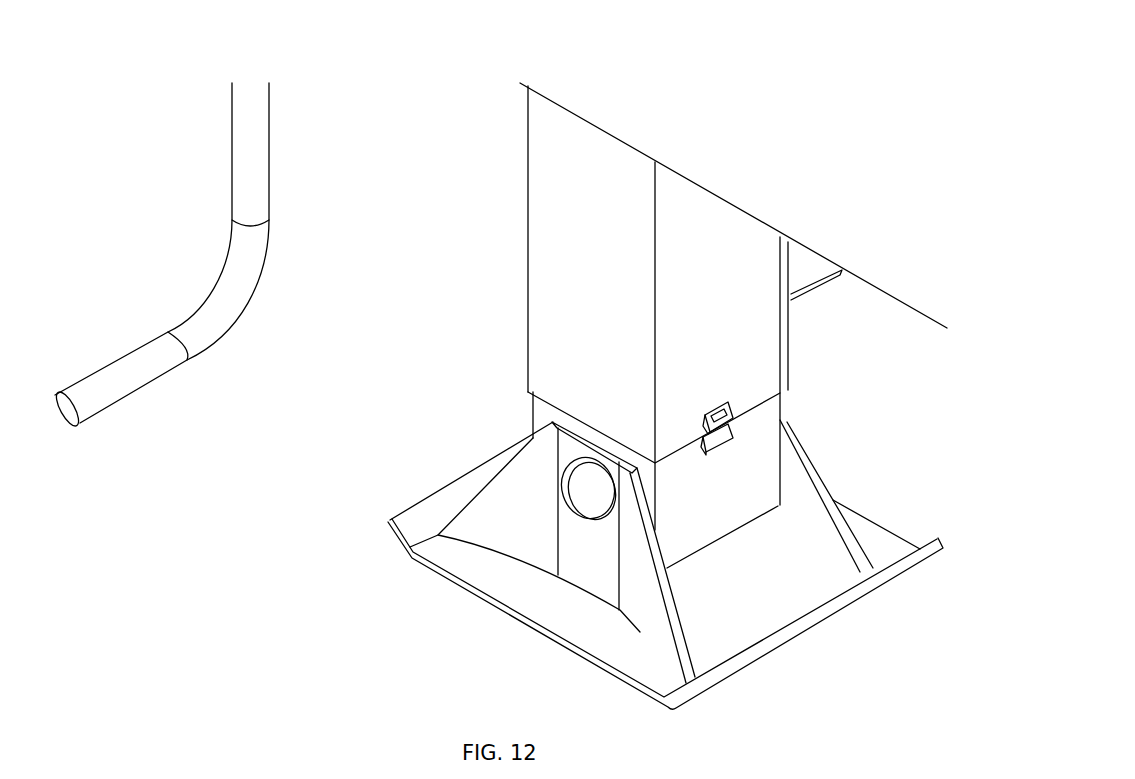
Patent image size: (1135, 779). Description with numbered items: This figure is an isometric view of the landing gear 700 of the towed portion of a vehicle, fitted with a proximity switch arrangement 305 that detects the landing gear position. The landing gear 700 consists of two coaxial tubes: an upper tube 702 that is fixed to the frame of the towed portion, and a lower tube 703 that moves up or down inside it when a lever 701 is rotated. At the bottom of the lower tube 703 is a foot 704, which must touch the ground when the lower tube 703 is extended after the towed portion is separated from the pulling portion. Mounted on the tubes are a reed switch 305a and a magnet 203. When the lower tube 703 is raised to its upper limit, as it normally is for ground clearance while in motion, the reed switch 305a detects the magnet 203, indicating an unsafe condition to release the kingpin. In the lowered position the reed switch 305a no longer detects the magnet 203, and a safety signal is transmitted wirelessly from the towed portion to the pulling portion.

The landing gear 700 is at (394, 185).
The lever 701 is at (158, 367).
The upper tube 702 is at (548, 297).
The lower tube 703 is at (543, 412).
The foot 704 is at (513, 598).
The latch assembly 305 is at (757, 390).
The reed switch 305a is at (737, 418).
The magnet 203 is at (732, 437).